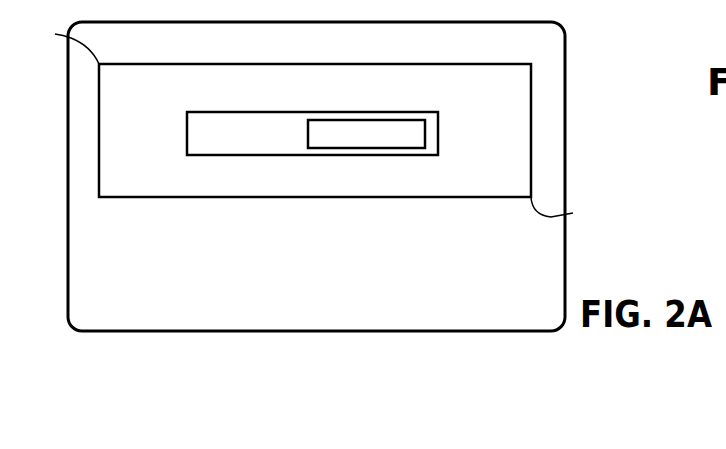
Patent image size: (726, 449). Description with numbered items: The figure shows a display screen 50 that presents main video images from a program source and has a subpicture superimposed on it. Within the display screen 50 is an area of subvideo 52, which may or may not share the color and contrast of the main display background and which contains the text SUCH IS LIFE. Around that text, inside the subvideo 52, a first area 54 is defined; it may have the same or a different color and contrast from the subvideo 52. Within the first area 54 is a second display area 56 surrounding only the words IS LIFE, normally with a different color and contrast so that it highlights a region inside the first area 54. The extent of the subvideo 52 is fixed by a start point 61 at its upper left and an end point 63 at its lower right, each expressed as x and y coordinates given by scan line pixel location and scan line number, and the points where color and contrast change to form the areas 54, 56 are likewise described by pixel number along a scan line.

The display screen 50 is at (504, 56).
The area of subvideo 52 is at (330, 64).
The first area 54 is at (230, 112).
The second display area 56 is at (344, 120).
The start point 61 is at (67, 41).
The end point 63 is at (566, 208).